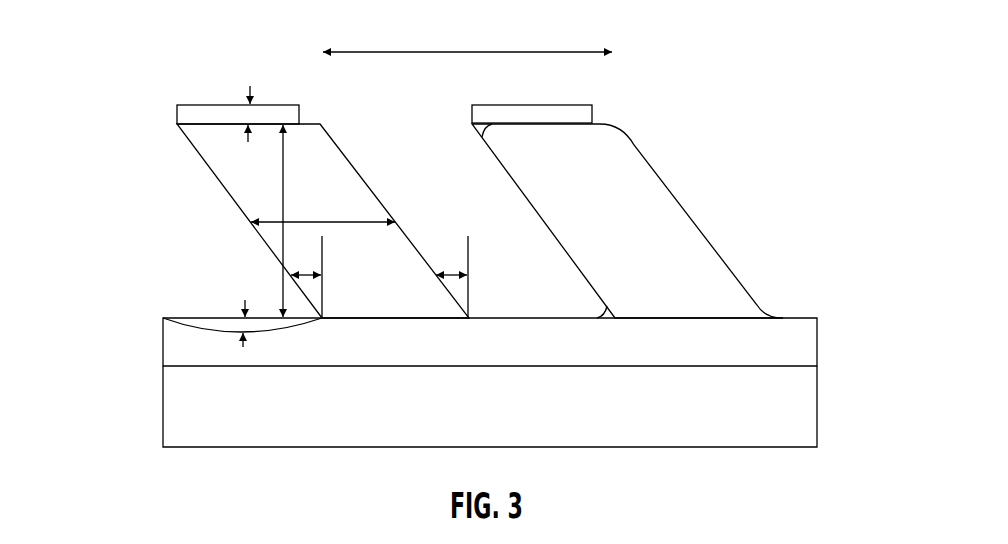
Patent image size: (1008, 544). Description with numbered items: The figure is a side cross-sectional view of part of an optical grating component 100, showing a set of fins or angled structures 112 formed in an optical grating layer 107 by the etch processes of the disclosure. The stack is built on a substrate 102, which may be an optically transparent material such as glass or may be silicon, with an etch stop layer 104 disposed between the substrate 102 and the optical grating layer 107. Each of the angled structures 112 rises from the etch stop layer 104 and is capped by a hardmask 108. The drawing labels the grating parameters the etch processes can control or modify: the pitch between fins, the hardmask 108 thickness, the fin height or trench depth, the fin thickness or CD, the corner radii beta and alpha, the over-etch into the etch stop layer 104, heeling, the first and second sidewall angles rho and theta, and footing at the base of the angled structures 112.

The optical grating component 100 is at (110, 72).
The substrate 102 is at (178, 401).
The etch stop layer 104 is at (808, 345).
The optical grating layer 107 is at (697, 242).
The hardmask 108 is at (185, 112).
The angled structures 112 is at (175, 174).